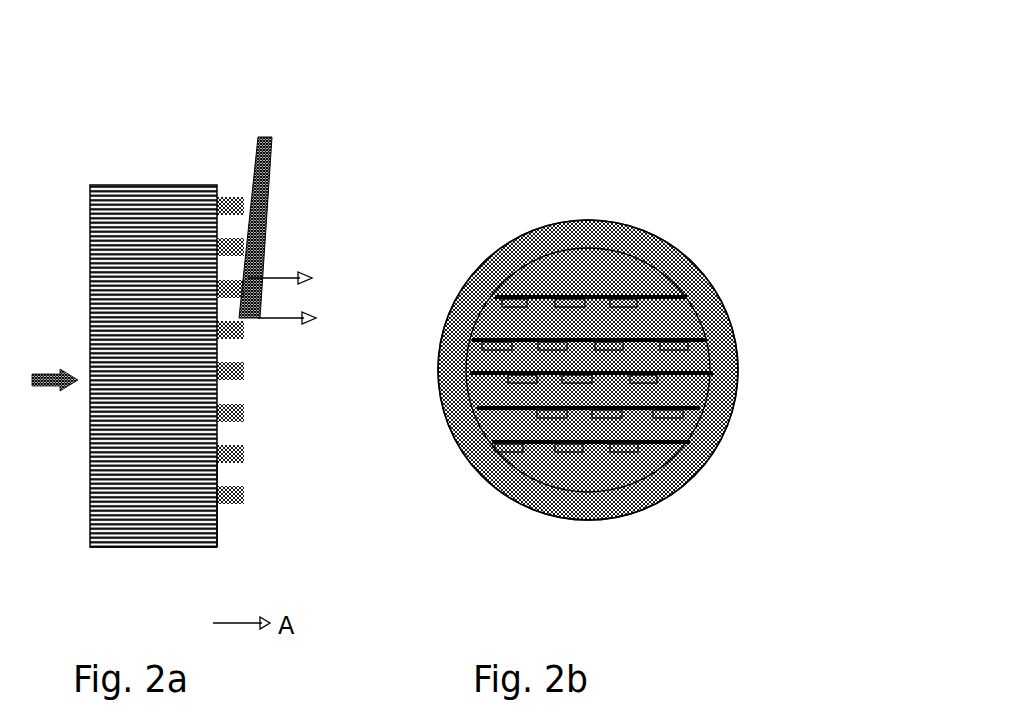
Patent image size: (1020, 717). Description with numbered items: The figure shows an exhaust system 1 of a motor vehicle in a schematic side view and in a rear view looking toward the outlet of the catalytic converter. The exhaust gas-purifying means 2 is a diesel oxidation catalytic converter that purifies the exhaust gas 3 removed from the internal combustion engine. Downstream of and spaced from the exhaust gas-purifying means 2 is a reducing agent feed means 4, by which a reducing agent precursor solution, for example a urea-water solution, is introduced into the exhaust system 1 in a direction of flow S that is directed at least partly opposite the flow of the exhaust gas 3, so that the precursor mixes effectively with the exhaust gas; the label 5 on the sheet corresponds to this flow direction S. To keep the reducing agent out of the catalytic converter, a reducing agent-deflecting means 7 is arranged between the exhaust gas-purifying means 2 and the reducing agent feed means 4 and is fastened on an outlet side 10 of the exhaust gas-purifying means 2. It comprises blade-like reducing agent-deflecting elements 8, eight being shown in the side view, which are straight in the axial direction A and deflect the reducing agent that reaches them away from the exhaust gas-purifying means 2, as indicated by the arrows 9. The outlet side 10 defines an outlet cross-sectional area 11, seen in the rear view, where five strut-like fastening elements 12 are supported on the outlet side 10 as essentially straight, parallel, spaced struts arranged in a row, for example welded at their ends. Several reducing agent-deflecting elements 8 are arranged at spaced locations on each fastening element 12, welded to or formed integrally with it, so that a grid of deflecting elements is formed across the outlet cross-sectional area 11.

In FIG. 2A, the exhaust system 1 is at (355, 135).
In FIG. 2B, the exhaust system 1 is at (818, 148).
In FIG. 2A, the exhaust gas-purifying means 2 is at (143, 190).
In FIG. 2B, the exhaust gas-purifying means 2 is at (580, 503).
In FIG. 2A, the exhaust gas 3 is at (52, 382).
In FIG. 2A, the reducing agent feed means 4 is at (268, 122).
In FIG. 2A, the sensing region 5 is at (293, 187).
In FIG. 2A, the reducing agent-deflecting means 7 is at (236, 190).
In FIG. 2A, the reducing agent-deflecting element 8 is at (244, 407).
In FIG. 2B, the reducing agent-deflecting element 8 is at (550, 297).
In FIG. 2A, the arrows 9 is at (282, 272).
In FIG. 2A, the outlet side 10 is at (222, 530).
In FIG. 2B, the outlet side 10 is at (693, 480).
In FIG. 2A, the outlet cross-sectional area 11 is at (217, 513).
In FIG. 2B, the outlet cross-sectional area 11 is at (743, 333).
In FIG. 2B, the fastening elements 12 is at (515, 297).